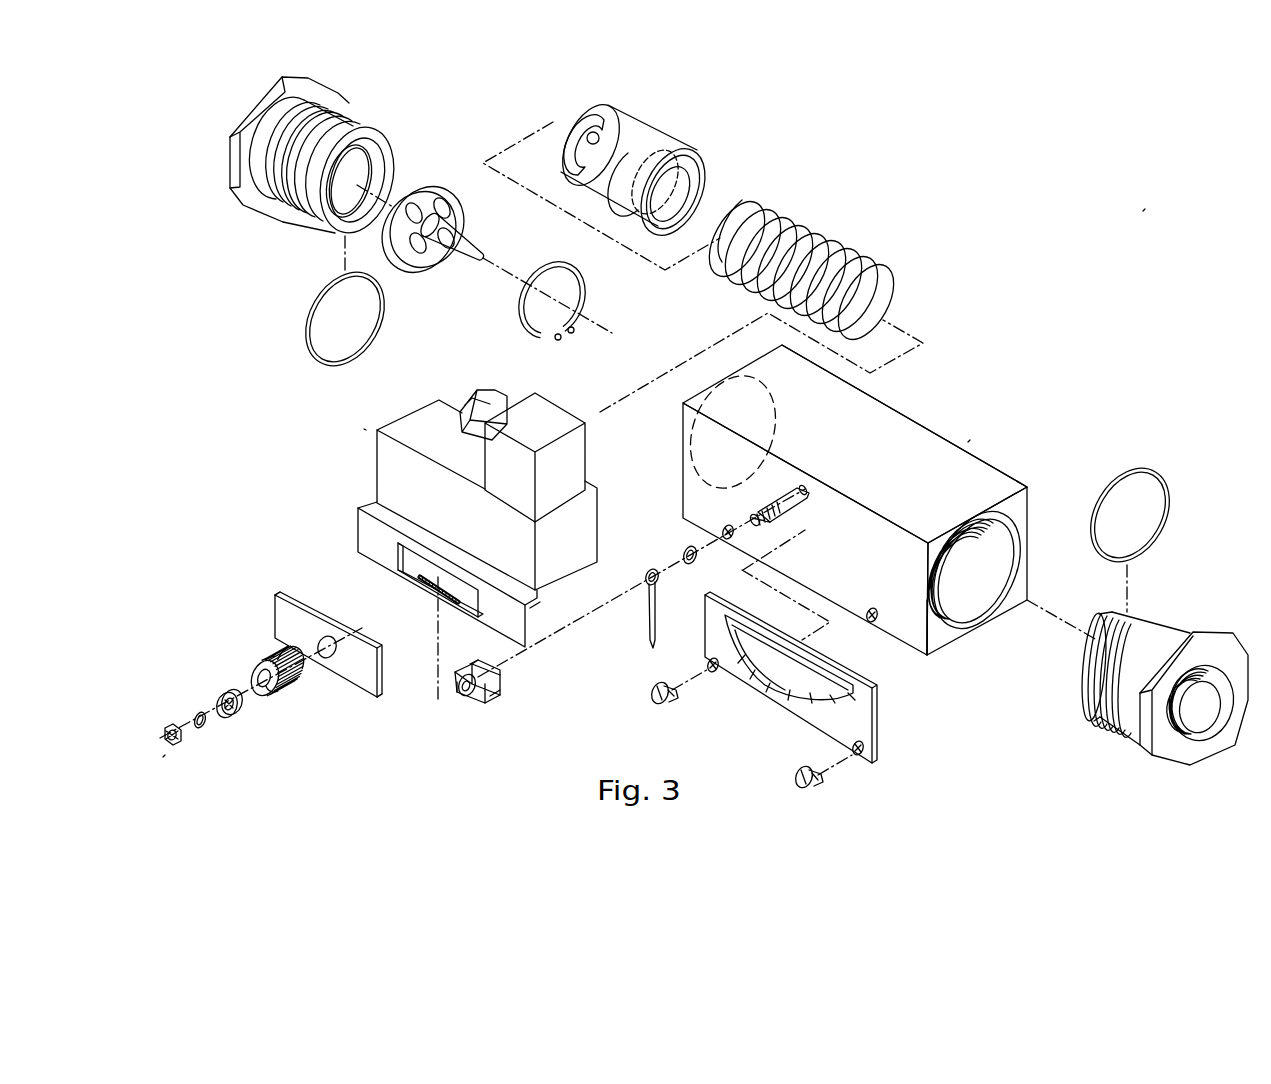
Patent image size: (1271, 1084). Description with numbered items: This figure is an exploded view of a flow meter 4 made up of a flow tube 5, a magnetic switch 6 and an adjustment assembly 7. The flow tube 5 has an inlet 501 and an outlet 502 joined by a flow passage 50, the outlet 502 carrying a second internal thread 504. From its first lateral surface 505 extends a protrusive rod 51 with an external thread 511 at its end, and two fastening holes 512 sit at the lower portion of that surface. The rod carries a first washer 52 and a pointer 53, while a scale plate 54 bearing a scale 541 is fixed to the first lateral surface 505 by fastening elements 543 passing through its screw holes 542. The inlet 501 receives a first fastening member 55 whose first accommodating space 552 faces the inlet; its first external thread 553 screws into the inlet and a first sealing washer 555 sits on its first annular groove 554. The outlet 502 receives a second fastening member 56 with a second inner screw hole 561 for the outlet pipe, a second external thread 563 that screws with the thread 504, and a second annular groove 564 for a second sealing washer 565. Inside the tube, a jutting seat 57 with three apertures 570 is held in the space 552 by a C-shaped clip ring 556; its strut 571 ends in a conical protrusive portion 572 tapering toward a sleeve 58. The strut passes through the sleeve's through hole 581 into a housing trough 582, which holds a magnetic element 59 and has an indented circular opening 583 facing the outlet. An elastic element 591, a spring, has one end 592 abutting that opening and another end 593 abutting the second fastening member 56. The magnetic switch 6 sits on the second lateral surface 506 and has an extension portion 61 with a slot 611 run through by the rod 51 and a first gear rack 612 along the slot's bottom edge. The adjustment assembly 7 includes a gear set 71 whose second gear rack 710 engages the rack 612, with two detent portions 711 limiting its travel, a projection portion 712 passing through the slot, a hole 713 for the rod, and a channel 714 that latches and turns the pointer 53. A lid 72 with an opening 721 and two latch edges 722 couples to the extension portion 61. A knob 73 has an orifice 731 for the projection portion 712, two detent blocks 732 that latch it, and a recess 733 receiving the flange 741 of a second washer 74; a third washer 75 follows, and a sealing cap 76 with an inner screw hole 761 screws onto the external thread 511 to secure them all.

The flow meter 4 is at (1143, 211).
The flow tube 5 is at (968, 442).
The magnetic switch 6 is at (366, 430).
The adjustment assembly 7 is at (163, 757).
The flow passage 50 is at (950, 560).
The inlet 501 is at (720, 451).
The outlet 502 is at (1000, 536).
The second internal thread 504 is at (967, 560).
The first lateral surface 505 is at (898, 575).
The second lateral surface 506 is at (960, 480).
The protrusive rod 51 is at (792, 500).
The external thread 511 is at (772, 512).
The fastening holes 512 is at (728, 540).
The first washer 52 is at (683, 555).
The pointer 53 is at (652, 622).
The scale plate 54 is at (858, 708).
The scale 541 is at (773, 686).
The screw holes 542 is at (708, 676).
The fastening elements 543 is at (657, 700).
The first fastening member 55 is at (232, 166).
The first accommodating space 552 is at (375, 166).
The first external thread 553 is at (332, 128).
The first annular groove 554 is at (355, 135).
The first sealing washer 555 is at (306, 330).
The C-shaped clip ring 556 is at (524, 307).
The second fastening member 56 is at (1168, 637).
The second inner screw hole 561 is at (1210, 710).
The second external thread 563 is at (1100, 690).
The second annular groove 564 is at (1088, 660).
The second sealing washer 565 is at (1147, 470).
The jutting seat 57 is at (399, 250).
The apertures 570 is at (448, 235).
The strut 571 is at (437, 216).
The conical protrusive portion 572 is at (462, 249).
The sleeve 58 is at (660, 127).
The through hole 581 is at (577, 127).
The housing trough 582 is at (680, 188).
The indented circular opening 583 is at (665, 225).
The magnetic element 59 is at (660, 185).
The elastic element 591 is at (828, 254).
The one end of the elastic element 592 is at (716, 226).
The another end of the elastic element 593 is at (876, 312).
The extension portion 61 is at (370, 535).
The slot 611 is at (412, 558).
The first gear rack 612 is at (420, 578).
The gear set 71 is at (490, 697).
The second gear rack 710 is at (492, 698).
The detent portions 711 is at (467, 660).
The projection portion 712 is at (476, 700).
The hole 713 is at (463, 690).
The channel 714 is at (478, 668).
The lid 72 is at (292, 622).
The opening 721 is at (332, 660).
The latch edges 722 is at (283, 593).
The knob 73 is at (273, 673).
The orifice 731 is at (263, 680).
The detent blocks 732 is at (282, 690).
The recess 733 is at (270, 690).
The second washer 74 is at (232, 715).
The flange 741 is at (236, 697).
The third washer 75 is at (198, 717).
The sealing cap 76 is at (186, 738).
The inner screw hole 761 is at (167, 738).